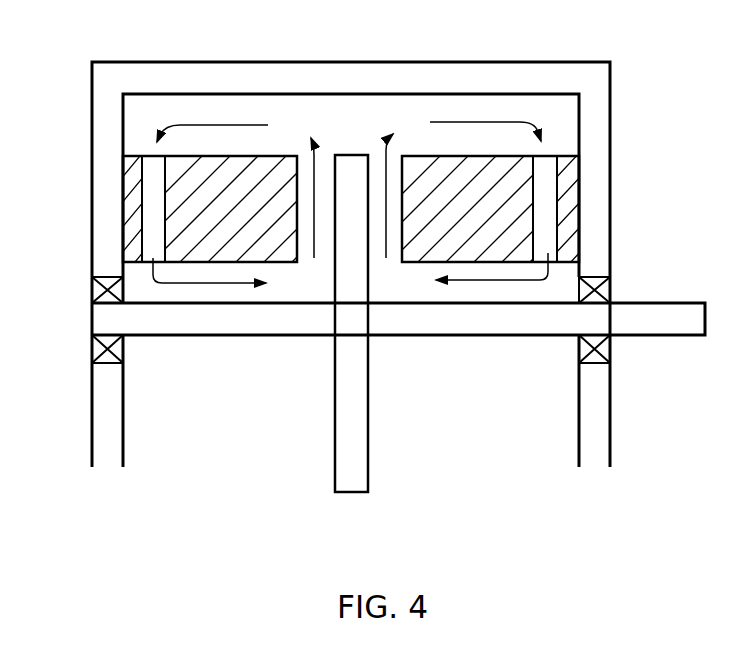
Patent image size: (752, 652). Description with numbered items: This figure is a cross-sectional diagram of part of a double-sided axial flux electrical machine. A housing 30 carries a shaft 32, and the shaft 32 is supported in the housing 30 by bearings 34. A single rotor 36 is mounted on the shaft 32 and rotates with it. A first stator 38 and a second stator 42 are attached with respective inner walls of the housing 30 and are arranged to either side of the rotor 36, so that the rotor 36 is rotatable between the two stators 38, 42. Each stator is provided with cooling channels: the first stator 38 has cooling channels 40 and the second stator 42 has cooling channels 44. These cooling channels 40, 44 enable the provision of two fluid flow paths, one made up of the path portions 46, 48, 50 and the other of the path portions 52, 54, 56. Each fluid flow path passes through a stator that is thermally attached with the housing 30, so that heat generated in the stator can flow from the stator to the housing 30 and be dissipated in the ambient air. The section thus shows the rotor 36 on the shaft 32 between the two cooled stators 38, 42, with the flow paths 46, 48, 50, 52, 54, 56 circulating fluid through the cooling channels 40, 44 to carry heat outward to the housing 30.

The housing 30 is at (100, 100).
The shaft 32 is at (105, 325).
The bearings 34 is at (92, 295).
The rotor 36 is at (352, 481).
The first stator 38 is at (572, 168).
The cooling channels 40 is at (553, 213).
The second stator 42 is at (128, 185).
The cooling channels 44 is at (152, 228).
The fluid flow path 46 is at (383, 237).
The fluid flow path 48 is at (455, 122).
The fluid flow path 50 is at (520, 282).
The fluid flow path 52 is at (327, 140).
The fluid flow path 54 is at (217, 124).
The fluid flow path 56 is at (235, 285).